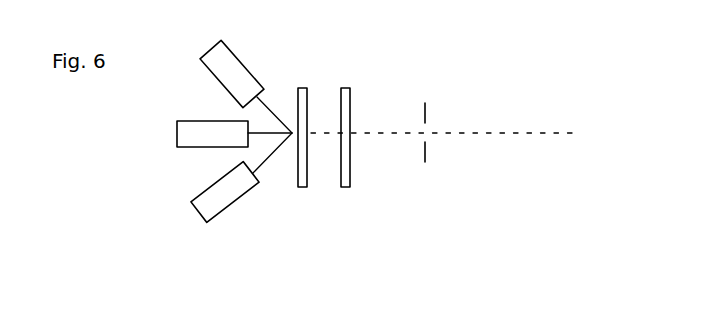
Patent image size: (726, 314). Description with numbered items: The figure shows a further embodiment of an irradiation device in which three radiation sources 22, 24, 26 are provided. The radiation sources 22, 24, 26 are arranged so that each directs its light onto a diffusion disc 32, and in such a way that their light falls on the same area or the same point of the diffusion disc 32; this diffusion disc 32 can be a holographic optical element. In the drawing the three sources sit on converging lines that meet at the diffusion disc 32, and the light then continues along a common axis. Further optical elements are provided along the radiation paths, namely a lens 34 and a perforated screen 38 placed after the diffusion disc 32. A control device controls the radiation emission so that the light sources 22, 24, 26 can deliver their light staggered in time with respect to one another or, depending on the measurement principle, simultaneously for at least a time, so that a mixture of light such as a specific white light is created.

The radiation source 22 is at (233, 195).
The radiation source 24 is at (222, 137).
The radiation source 26 is at (233, 70).
The diffusion disc 32 is at (300, 112).
The lens 34 is at (347, 125).
The perforated screen 38 is at (427, 155).